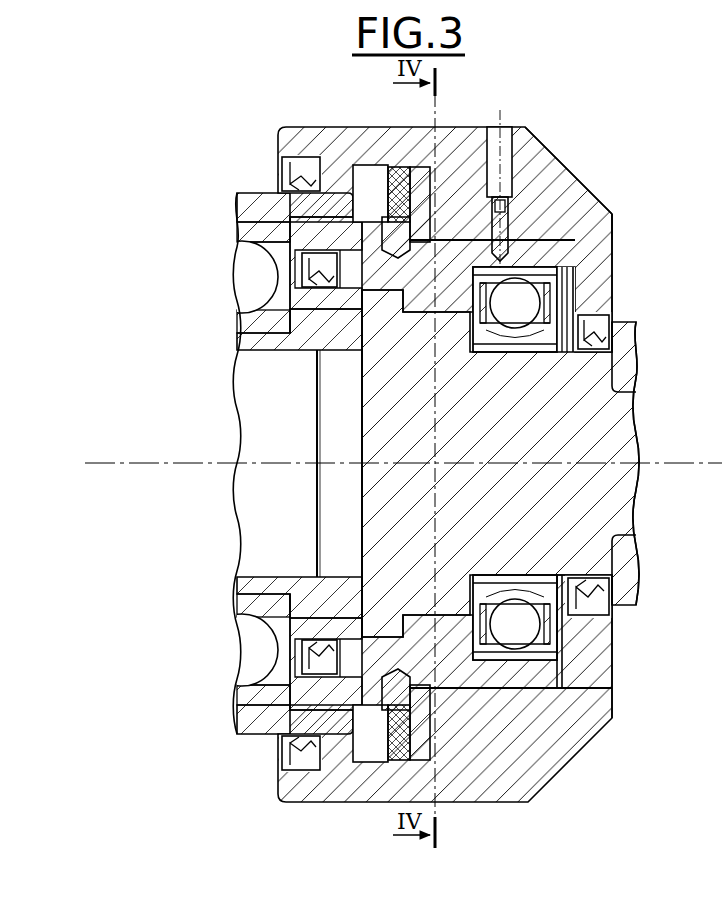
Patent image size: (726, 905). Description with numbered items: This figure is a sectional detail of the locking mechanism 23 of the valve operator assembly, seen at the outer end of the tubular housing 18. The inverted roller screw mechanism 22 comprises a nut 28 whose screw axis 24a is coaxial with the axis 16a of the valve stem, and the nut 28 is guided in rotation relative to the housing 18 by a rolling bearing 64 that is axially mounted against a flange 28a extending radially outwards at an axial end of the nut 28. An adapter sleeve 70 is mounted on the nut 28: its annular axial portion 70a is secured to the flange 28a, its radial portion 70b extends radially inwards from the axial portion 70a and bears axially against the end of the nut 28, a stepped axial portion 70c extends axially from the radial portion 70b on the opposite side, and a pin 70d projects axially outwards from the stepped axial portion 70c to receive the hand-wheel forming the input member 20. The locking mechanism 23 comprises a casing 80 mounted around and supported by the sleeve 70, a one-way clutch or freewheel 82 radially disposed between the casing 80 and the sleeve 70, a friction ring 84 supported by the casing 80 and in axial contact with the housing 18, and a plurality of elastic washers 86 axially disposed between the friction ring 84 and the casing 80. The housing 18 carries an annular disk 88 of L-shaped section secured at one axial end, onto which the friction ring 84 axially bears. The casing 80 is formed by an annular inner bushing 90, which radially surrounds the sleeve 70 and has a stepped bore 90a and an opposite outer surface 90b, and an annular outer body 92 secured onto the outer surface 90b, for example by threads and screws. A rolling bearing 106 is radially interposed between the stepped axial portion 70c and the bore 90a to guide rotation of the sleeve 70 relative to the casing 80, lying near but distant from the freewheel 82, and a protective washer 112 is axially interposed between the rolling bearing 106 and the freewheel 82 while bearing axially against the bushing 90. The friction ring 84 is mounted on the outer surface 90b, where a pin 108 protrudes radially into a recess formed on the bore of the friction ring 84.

The axis of valve stem 16a is at (224, 438).
The axis of screw 24a is at (409, 438).
The tubular housing 18 is at (246, 735).
The input member 20 is at (633, 320).
The inverted roller screw mechanism 22 is at (250, 378).
The locking mechanism 23 is at (588, 152).
The nut 28 is at (250, 338).
The flange of the nut 28a is at (322, 606).
The rolling bearing 64 is at (250, 698).
The adapter sleeve 70 is at (598, 553).
The annular axial portion 70a is at (258, 640).
The radial portion 70b is at (377, 560).
The stepped axial portion 70c is at (493, 505).
The pin 70d is at (632, 516).
The casing 80 is at (604, 196).
The one-way clutch or freewheel 82 is at (570, 685).
The friction ring 84 is at (397, 178).
The elastic washers 86 is at (423, 187).
The annular disk 88 is at (360, 183).
The annular inner bushing 90 is at (586, 280).
The stepped bore 90a is at (505, 328).
The outer surface 90b is at (490, 132).
The annular outer body 92 is at (536, 137).
The rolling bearing 106 is at (543, 652).
The pin 108 is at (392, 233).
The protective washer 112 is at (483, 662).